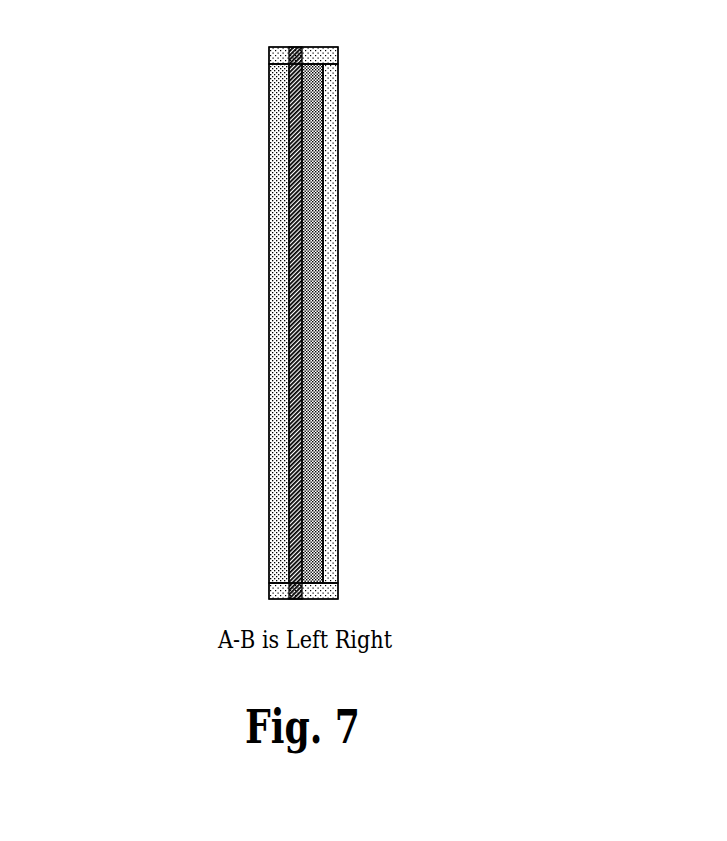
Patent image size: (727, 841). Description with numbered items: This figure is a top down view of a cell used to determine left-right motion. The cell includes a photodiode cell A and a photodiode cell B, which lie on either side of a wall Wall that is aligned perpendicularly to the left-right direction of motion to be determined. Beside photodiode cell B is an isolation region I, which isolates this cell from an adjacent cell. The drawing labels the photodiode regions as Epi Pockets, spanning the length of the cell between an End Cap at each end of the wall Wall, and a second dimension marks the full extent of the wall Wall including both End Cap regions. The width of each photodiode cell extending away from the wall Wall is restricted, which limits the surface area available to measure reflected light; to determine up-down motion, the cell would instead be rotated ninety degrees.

The end cap End Cap is at (344, 57).
The epi pockets Epi Pockets is at (258, 581).
The wall Wall is at (106, 599).
The photodiode cell A is at (282, 321).
The photodiode cell B is at (313, 321).
The isolation region I is at (329, 321).